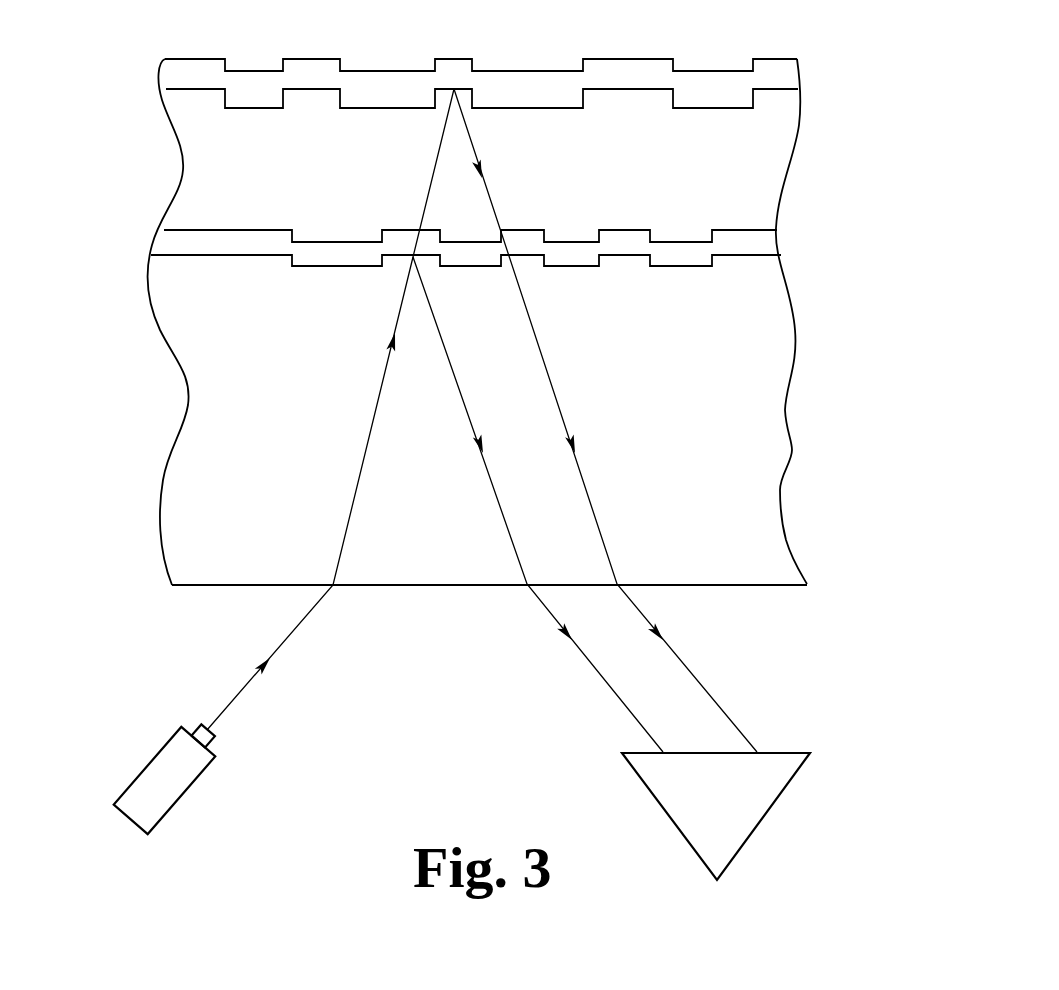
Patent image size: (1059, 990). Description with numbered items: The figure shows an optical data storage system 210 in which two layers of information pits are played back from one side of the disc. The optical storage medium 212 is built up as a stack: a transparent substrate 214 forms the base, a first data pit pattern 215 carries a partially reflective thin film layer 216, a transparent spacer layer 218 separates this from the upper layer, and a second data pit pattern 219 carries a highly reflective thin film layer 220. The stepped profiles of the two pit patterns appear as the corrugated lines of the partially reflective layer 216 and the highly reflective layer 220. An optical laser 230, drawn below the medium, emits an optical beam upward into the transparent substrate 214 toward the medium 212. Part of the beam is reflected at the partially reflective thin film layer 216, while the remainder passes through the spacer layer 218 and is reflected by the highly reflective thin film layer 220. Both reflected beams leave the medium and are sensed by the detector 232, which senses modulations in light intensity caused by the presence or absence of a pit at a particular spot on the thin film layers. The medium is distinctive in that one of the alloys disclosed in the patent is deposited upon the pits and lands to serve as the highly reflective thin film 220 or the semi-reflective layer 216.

The optical data storage system 210 is at (485, 622).
The optical storage medium 212 is at (158, 418).
The transparent substrate 214 is at (715, 473).
The first data pit pattern 215 is at (250, 257).
The partially reflective thin film layer 216 is at (723, 240).
The transparent spacer layer 218 is at (703, 162).
The second data pit pattern 219 is at (306, 91).
The highly reflective thin film layer 220 is at (713, 87).
The optical laser 230 is at (187, 793).
The detector 232 is at (752, 830).